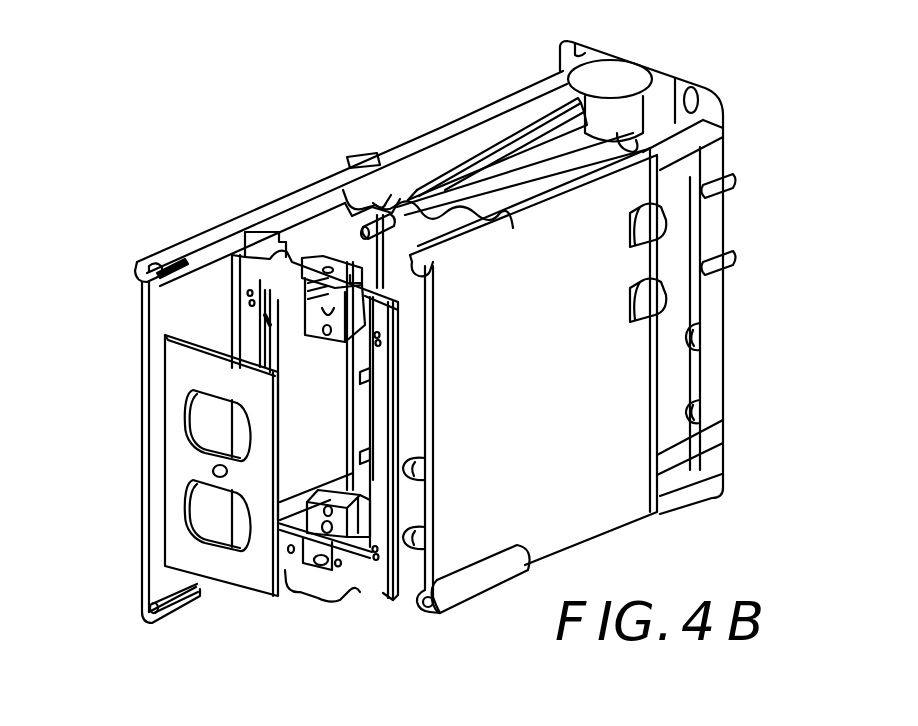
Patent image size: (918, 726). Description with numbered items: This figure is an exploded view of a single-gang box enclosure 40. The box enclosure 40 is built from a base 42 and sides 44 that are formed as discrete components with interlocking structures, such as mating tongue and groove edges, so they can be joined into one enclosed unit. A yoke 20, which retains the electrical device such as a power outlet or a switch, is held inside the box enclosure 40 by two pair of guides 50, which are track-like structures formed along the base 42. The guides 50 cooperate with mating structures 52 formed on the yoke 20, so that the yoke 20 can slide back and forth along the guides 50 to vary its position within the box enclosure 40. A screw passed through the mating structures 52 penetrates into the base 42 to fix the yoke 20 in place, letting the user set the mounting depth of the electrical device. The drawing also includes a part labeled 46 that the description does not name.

The yoke 20 is at (255, 275).
The box enclosure 40 is at (133, 415).
The base 42 is at (465, 160).
The sides 44 is at (290, 190).
The front lip / flange 46 is at (140, 272).
The guides 50 is at (380, 200).
The mating structures 52 is at (327, 580).